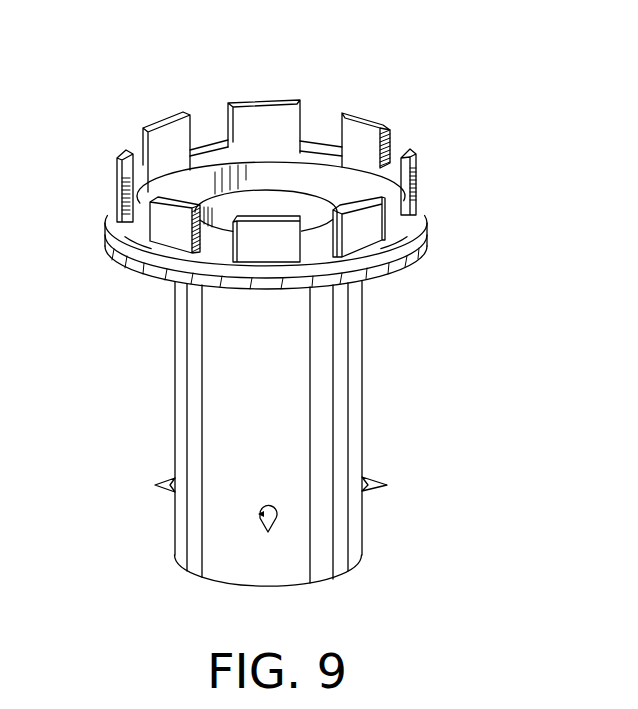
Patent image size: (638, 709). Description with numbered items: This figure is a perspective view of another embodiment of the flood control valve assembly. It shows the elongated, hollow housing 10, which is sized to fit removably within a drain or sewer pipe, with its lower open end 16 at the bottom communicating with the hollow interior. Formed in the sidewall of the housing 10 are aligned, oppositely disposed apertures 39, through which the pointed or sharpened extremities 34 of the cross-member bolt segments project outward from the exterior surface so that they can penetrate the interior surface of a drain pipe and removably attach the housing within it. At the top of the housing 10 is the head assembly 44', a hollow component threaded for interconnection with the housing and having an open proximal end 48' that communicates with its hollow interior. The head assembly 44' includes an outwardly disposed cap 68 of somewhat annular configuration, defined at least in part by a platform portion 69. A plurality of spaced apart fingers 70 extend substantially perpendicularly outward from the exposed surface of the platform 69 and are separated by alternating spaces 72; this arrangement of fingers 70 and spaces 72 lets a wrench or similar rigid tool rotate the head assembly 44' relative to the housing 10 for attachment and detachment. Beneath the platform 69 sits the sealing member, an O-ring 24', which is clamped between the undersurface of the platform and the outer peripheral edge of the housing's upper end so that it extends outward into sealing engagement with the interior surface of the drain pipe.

The housing 10 is at (392, 381).
The lower open end 16 is at (343, 578).
The O-ring 24' is at (301, 256).
The pointed extremity of bolt segment 34 is at (156, 483).
The aperture 39 is at (272, 507).
The head assembly 44' is at (292, 62).
The open proximal end 48' is at (266, 180).
The cap 68 is at (362, 190).
The platform portion 69 is at (160, 191).
The fingers 70 is at (150, 118).
The spaces 72 is at (207, 118).